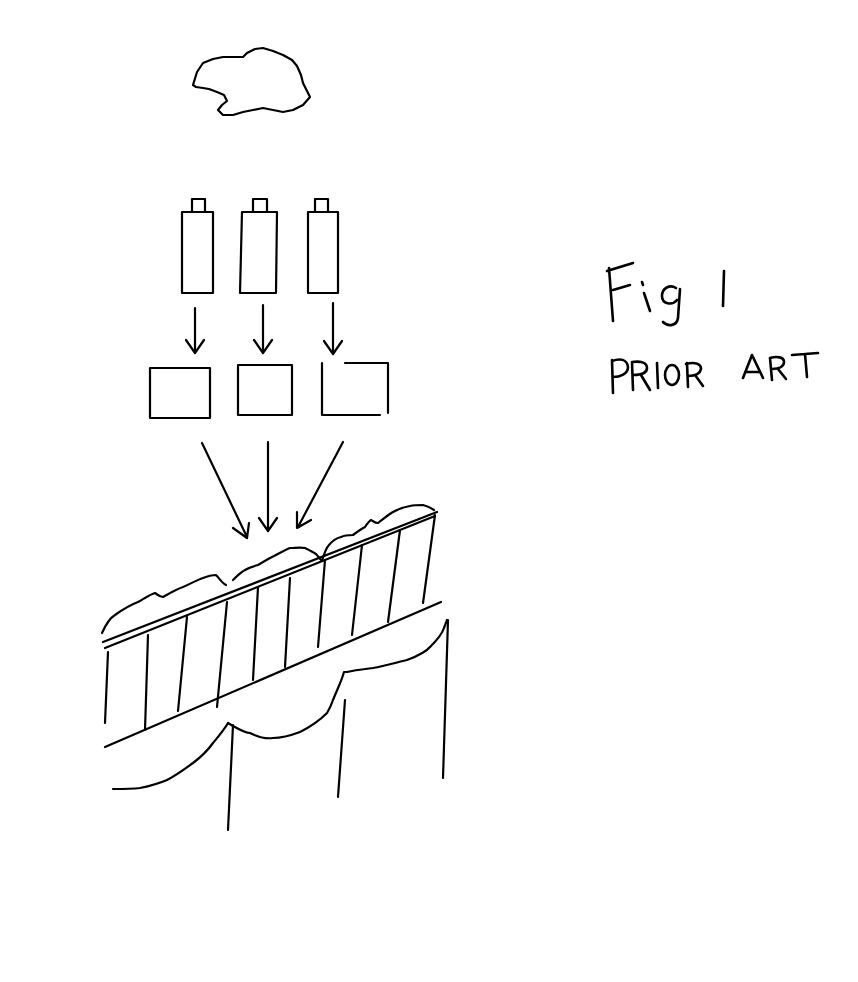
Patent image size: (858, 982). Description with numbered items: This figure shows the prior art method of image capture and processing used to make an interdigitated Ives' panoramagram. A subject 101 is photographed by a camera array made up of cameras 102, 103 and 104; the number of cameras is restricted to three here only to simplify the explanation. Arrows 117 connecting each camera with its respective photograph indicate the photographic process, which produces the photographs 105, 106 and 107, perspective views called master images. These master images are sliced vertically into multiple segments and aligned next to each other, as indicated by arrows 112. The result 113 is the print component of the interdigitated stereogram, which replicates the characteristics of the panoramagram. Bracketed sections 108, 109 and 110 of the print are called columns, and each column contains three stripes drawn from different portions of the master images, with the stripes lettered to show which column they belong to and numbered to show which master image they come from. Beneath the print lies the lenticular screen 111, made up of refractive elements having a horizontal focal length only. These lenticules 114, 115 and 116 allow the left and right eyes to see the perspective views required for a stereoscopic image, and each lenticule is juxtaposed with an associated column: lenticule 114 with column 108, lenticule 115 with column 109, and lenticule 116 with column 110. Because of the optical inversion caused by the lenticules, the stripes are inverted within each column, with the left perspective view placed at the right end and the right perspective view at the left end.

The subject 101 is at (323, 72).
The camera 102 is at (172, 228).
The camera 103 is at (280, 205).
The camera 104 is at (343, 233).
The arrows 117 is at (368, 316).
The photograph 105 is at (132, 397).
The photograph 106 is at (267, 408).
The photograph 107 is at (403, 377).
The arrows 112 is at (360, 471).
The column 108 is at (164, 599).
The column 109 is at (277, 555).
The column 110 is at (378, 526).
The result 113 is at (463, 557).
The lenticular screen 111 is at (463, 680).
The lenticule 114 is at (195, 833).
The lenticule 115 is at (310, 783).
The lenticule 116 is at (427, 757).